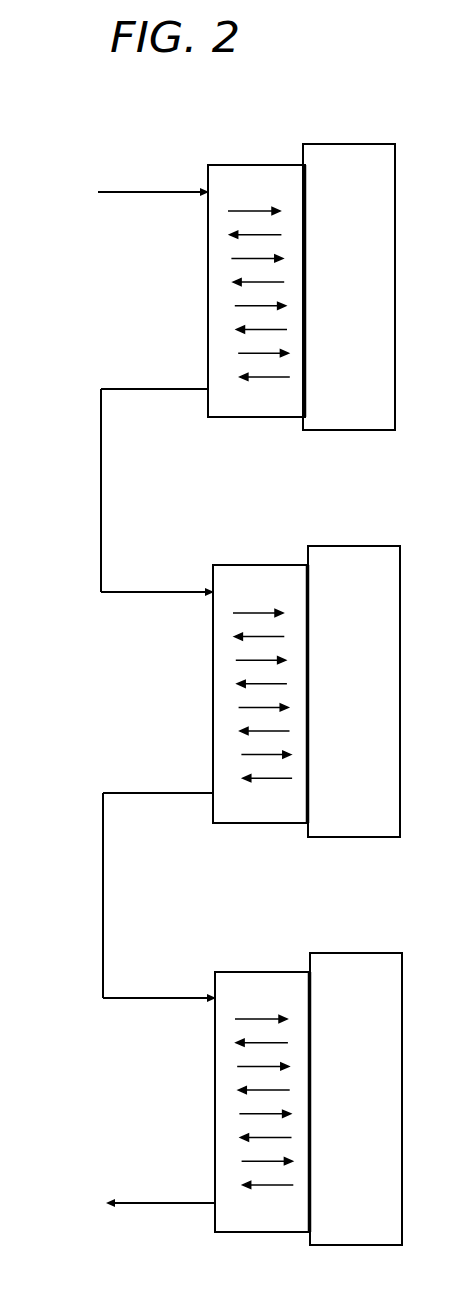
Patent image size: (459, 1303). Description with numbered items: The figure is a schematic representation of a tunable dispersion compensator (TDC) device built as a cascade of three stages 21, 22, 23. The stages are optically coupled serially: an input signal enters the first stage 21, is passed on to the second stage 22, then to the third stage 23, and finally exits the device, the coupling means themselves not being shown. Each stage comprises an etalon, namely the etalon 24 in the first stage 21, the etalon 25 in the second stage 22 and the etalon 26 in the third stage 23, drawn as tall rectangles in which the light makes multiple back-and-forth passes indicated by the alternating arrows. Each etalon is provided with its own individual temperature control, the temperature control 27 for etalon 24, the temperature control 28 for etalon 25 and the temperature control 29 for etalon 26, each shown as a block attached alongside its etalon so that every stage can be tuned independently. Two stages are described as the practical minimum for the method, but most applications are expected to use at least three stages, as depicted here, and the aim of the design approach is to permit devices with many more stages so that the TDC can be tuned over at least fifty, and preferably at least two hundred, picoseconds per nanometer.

The first stage 21 is at (53, 316).
The second stage 22 is at (57, 708).
The third stage 23 is at (58, 1119).
The etalon 24 is at (253, 164).
The etalon 25 is at (263, 564).
The etalon 26 is at (262, 971).
The temperature control 27 is at (338, 144).
The temperature control 28 is at (350, 546).
The temperature control 29 is at (352, 953).